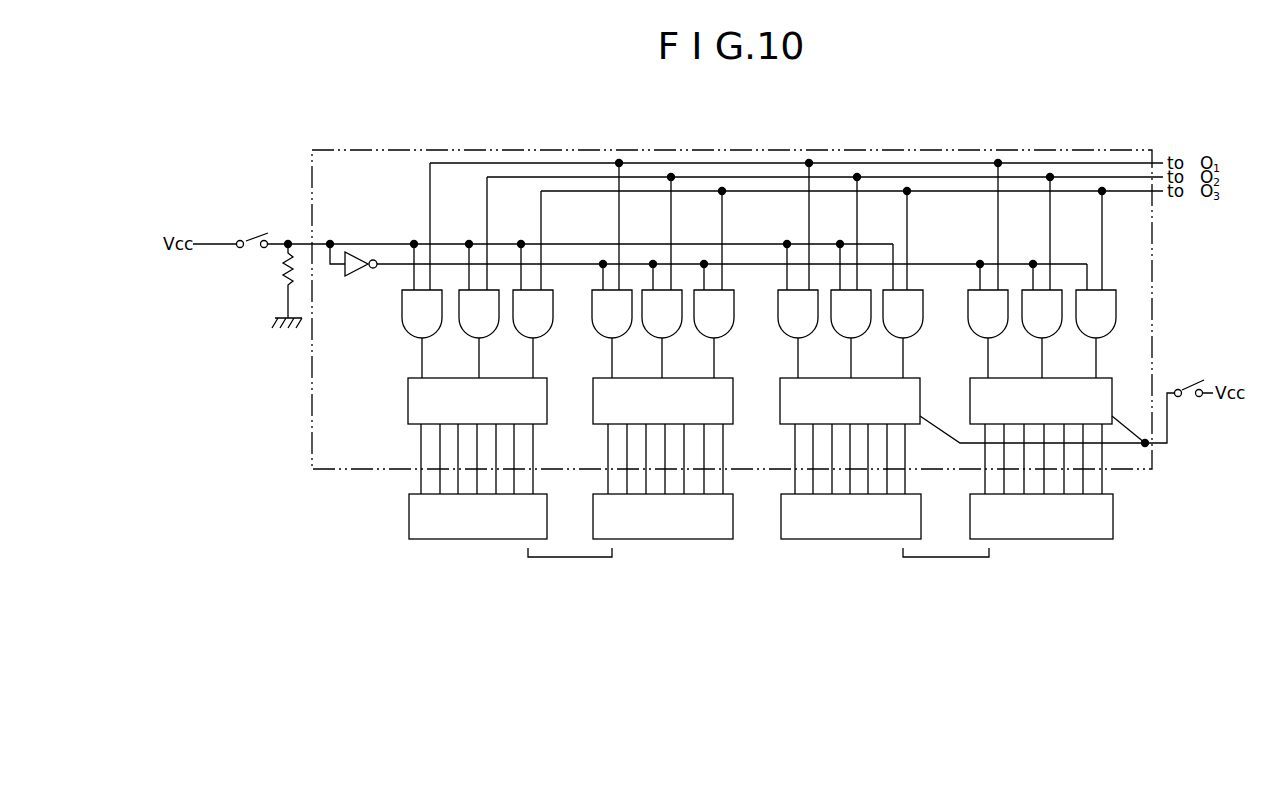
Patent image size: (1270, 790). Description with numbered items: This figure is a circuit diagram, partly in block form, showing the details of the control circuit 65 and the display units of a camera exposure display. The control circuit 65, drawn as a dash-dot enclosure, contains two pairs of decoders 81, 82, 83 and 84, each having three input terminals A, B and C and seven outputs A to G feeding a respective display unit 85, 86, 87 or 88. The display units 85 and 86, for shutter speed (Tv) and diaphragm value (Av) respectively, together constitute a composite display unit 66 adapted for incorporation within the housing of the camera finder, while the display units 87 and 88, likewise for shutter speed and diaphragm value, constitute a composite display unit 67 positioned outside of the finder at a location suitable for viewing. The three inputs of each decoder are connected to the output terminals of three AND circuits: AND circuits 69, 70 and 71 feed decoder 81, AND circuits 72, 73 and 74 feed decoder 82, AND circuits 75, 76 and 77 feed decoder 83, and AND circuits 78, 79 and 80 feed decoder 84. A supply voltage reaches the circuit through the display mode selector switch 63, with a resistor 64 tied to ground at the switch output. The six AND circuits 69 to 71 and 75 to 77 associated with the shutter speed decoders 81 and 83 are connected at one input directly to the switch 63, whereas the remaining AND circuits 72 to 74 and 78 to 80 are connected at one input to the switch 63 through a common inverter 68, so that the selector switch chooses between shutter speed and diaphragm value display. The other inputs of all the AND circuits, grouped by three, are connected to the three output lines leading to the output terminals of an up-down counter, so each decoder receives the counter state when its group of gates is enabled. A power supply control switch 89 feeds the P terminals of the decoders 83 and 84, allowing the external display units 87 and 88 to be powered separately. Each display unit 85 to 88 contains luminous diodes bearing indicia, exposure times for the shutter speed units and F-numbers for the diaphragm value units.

The display mode selector switch 63 is at (258, 236).
The resistor 64 is at (283, 283).
The control circuit 65 is at (1003, 149).
The composite display unit 66 is at (558, 590).
The composite display unit 67 is at (933, 590).
The common inverter 68 is at (352, 276).
The AND circuit 69 is at (422, 270).
The AND circuit 70 is at (479, 277).
The AND circuit 71 is at (533, 284).
The AND circuit 72 is at (612, 270).
The AND circuit 73 is at (662, 277).
The AND circuit 74 is at (714, 284).
The AND circuit 75 is at (798, 270).
The AND circuit 76 is at (851, 277).
The AND circuit 77 is at (903, 284).
The AND circuit 78 is at (988, 270).
The AND circuit 79 is at (1042, 277).
The AND circuit 80 is at (1096, 284).
The decoder 81 is at (408, 411).
The decoder 82 is at (593, 411).
The decoder 83 is at (780, 411).
The decoder 84 is at (970, 411).
The display unit 85 is at (409, 518).
The display unit 86 is at (593, 518).
The display unit 87 is at (781, 518).
The display unit 88 is at (970, 518).
The power supply control switch 89 is at (1190, 399).